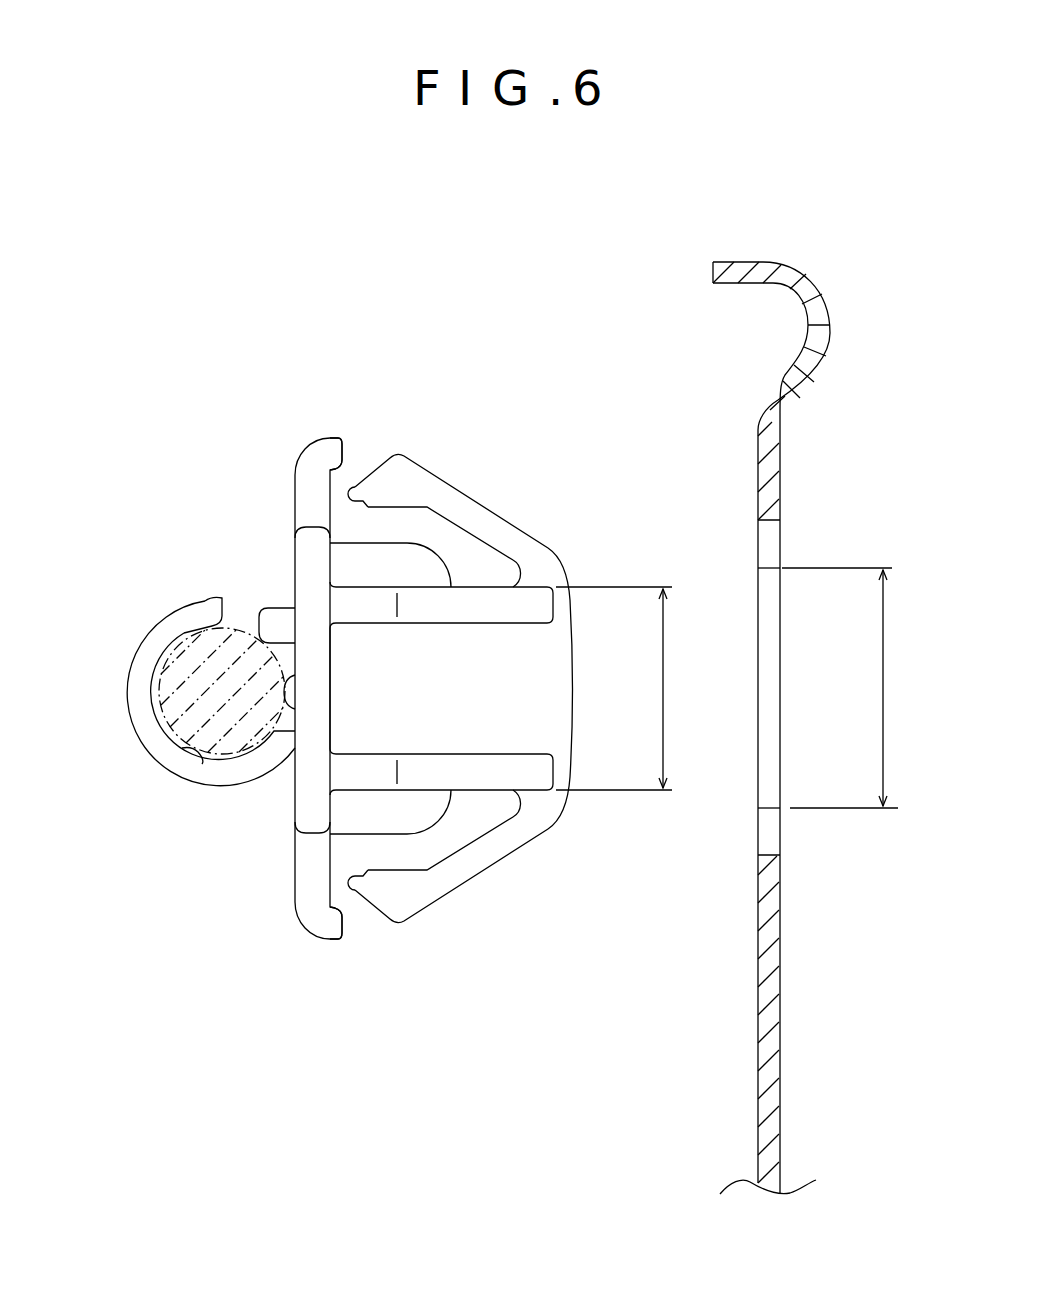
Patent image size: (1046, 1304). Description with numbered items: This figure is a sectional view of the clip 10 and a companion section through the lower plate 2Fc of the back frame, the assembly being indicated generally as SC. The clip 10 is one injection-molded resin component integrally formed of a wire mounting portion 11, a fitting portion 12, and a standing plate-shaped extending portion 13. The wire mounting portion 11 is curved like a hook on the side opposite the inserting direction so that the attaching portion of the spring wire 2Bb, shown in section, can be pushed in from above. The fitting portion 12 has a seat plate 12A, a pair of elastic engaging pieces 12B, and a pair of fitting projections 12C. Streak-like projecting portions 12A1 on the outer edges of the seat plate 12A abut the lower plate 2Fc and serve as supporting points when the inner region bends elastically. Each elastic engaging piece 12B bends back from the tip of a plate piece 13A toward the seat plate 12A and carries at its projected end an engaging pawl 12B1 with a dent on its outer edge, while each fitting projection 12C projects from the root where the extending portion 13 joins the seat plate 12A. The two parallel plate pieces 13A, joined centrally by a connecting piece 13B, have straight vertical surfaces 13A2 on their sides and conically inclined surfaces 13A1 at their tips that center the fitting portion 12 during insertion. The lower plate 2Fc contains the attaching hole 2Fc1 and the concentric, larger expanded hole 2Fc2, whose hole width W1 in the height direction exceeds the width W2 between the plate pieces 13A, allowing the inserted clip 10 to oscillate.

The seat clamp assembly SC is at (442, 265).
The clip 10 is at (277, 490).
The wire mounting portion 11 is at (185, 765).
The fitting portion 12 is at (506, 512).
The seat plate 12A is at (310, 543).
The projecting portion 12A1 is at (345, 452).
The elastic engaging piece 12B is at (462, 506).
The engaging pawl 12B1 is at (357, 494).
The fitting projection 12C is at (393, 567).
The extending portion 13 is at (544, 582).
The plate piece 13A is at (531, 605).
The inclined surface 13A1 is at (481, 609).
The vertical surface 13A2 is at (350, 603).
The connecting piece 13B is at (502, 688).
The spring wire 2Bb is at (183, 665).
The lower plate 2Fc is at (768, 468).
The attaching hole 2Fc1 is at (765, 539).
The expanded hole 2Fc2 is at (767, 688).
The hole width W1 is at (849, 688).
The width between the plate pieces W2 is at (628, 688).